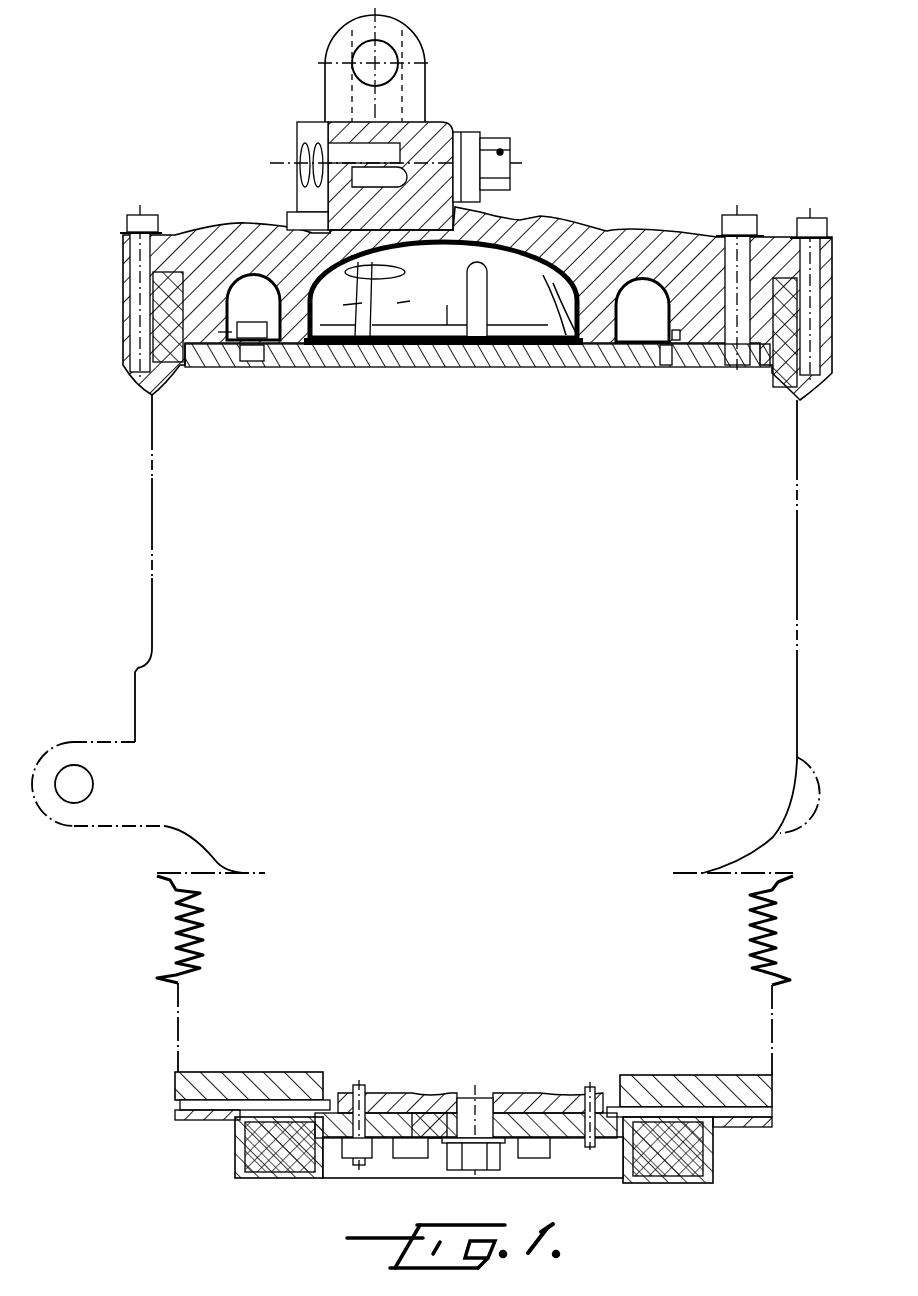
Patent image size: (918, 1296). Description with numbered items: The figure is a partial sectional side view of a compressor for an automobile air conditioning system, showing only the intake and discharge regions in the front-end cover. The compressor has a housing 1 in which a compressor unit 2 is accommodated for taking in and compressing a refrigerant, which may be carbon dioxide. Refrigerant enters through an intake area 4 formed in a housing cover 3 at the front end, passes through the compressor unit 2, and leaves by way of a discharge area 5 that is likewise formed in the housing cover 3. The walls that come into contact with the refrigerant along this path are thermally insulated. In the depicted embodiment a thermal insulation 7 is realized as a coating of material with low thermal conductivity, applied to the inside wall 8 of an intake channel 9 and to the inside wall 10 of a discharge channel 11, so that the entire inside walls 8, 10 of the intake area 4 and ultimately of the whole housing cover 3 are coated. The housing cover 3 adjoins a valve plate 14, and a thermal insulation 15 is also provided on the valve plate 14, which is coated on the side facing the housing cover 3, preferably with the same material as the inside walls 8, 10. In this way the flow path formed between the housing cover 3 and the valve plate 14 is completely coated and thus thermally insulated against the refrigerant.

The housing 1 is at (58, 533).
The compressor unit 2 is at (499, 578).
The housing cover 3 is at (765, 232).
The intake area 4 is at (416, 304).
The discharge area 5 is at (612, 196).
The thermal insulation 7 is at (527, 236).
The inside wall of intake channel 8 is at (550, 347).
The intake channel 9 is at (444, 279).
The inside wall of discharge channel 10 is at (643, 290).
The discharge channel 11 is at (657, 330).
The valve plate 14 is at (372, 367).
The thermal insulation 15 is at (468, 367).